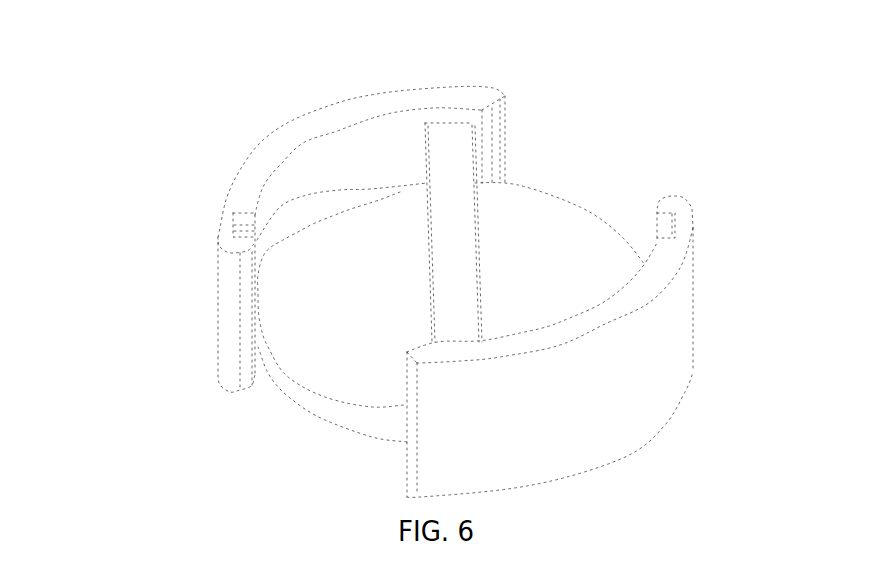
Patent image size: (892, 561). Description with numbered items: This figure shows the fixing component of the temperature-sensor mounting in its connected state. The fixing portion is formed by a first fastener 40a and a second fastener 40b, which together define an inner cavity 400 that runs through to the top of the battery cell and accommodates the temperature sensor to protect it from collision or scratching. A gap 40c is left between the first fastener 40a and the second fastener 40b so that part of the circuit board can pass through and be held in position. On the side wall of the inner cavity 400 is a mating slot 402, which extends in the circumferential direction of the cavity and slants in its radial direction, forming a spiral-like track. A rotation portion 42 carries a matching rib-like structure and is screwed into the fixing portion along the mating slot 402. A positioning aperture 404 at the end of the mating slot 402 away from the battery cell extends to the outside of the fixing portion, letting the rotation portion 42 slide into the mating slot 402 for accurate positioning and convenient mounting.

The first fastener 40a is at (307, 133).
The second fastener 40b is at (585, 393).
The gap 40c is at (298, 420).
The inner cavity 400 is at (393, 158).
The mating slot 402 is at (292, 217).
The positioning aperture 404 is at (233, 225).
The rotation portion 42 is at (548, 247).